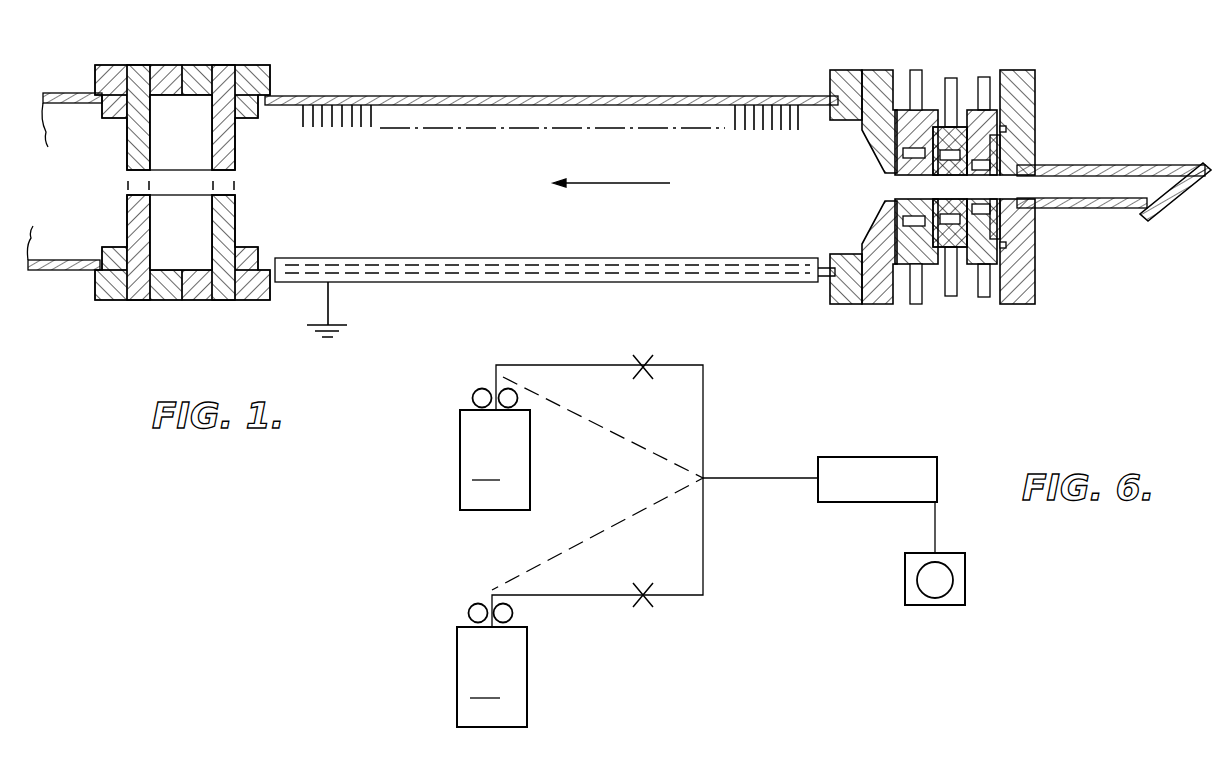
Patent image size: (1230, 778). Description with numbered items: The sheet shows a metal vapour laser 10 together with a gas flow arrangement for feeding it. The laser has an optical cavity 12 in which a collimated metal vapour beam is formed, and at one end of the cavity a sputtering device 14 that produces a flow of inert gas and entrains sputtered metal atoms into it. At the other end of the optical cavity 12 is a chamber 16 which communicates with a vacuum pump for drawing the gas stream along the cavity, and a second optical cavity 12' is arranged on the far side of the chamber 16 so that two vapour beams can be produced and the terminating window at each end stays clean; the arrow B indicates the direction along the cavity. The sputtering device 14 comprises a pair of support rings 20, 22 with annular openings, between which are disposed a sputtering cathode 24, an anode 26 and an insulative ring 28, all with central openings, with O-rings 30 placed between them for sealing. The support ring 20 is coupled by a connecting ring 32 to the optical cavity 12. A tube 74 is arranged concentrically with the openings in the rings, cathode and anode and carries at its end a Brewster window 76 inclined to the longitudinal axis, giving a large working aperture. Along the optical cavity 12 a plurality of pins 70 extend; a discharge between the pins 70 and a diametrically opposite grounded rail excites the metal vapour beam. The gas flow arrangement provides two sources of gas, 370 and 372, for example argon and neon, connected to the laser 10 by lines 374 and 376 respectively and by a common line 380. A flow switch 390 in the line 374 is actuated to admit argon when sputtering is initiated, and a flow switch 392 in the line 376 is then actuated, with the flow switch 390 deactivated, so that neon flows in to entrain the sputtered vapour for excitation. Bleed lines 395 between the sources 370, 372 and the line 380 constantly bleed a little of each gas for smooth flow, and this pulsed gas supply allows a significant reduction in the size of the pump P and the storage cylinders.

In FIG. 1, the metal vapour laser 10 is at (653, 86).
In FIG. 6, the metal vapour laser 10 is at (867, 450).
In FIG. 1, the optical cavity 12 is at (551, 153).
In FIG. 1, the second optical cavity 12' is at (64, 144).
In FIG. 1, the sputtering device 14 is at (1010, 191).
In FIG. 1, the chamber 16 is at (195, 65).
In FIG. 1, the support ring 20 is at (877, 70).
In FIG. 1, the support ring 22 is at (1020, 70).
In FIG. 1, the sputtering cathode 24 is at (925, 110).
In FIG. 1, the anode 26 is at (962, 110).
In FIG. 1, the insulative ring 28 is at (948, 265).
In FIG. 1, the O-rings 30 is at (1007, 135).
In FIG. 1, the connecting ring 32 is at (845, 70).
In FIG. 1, the pins 70 is at (350, 120).
In FIG. 1, the tube 74 is at (1137, 165).
In FIG. 1, the Brewster window 76 is at (1170, 207).
In FIG. 6, the gas source 370 is at (460, 448).
In FIG. 6, the gas source 372 is at (458, 658).
In FIG. 6, the line 374 is at (697, 362).
In FIG. 6, the line 376 is at (690, 597).
In FIG. 6, the common line 380 is at (750, 478).
In FIG. 6, the flow switch 390 is at (647, 357).
In FIG. 6, the flow switch 392 is at (637, 603).
In FIG. 6, the bleed lines 395 is at (615, 523).
In FIG. 1, the beam direction B is at (599, 183).
In FIG. 6, the pump P is at (910, 603).